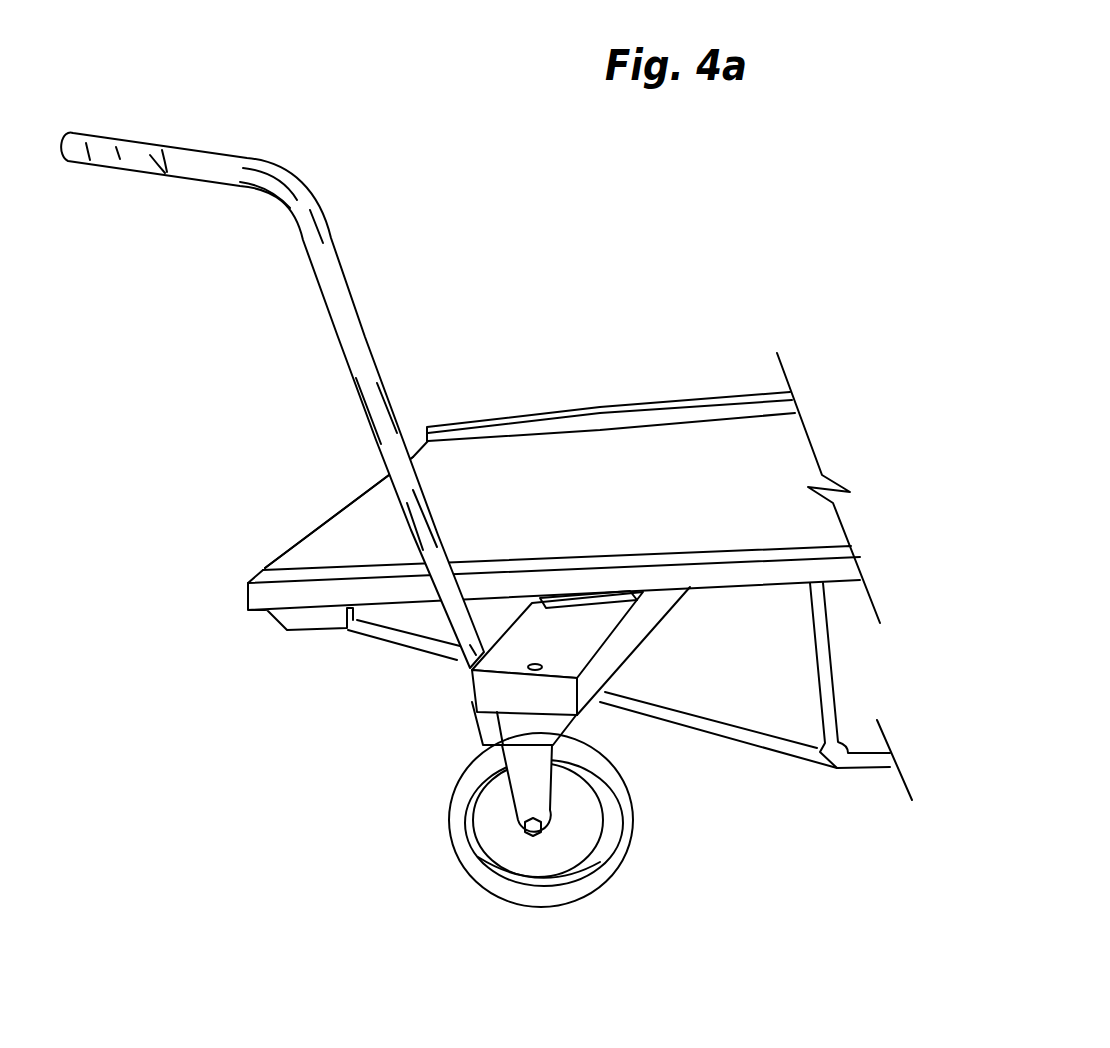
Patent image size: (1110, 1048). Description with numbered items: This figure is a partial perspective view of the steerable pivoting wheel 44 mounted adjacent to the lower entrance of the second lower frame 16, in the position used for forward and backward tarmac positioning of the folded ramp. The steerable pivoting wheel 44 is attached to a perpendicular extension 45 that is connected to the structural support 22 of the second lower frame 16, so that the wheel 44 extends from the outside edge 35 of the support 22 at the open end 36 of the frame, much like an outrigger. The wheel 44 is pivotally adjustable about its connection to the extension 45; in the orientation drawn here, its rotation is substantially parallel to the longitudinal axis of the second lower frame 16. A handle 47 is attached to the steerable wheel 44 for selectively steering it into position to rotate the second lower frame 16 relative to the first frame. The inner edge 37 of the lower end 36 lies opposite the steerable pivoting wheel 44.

The second lower frame 16 is at (578, 468).
The structural support 22 is at (297, 598).
The outside edge 35 is at (620, 577).
The open end 36 is at (297, 547).
The inner edge 37 is at (475, 433).
The steerable pivoting wheel 44 is at (630, 811).
The perpendicular extension 45 is at (498, 694).
The handle 47 is at (333, 305).